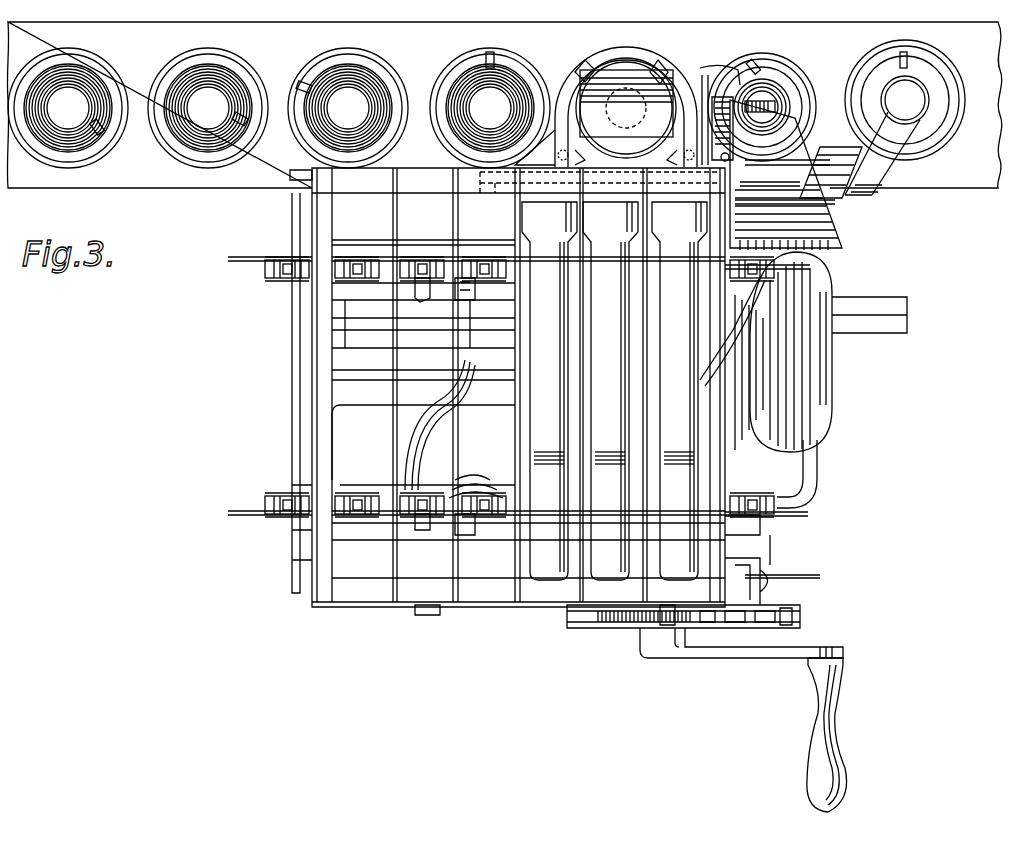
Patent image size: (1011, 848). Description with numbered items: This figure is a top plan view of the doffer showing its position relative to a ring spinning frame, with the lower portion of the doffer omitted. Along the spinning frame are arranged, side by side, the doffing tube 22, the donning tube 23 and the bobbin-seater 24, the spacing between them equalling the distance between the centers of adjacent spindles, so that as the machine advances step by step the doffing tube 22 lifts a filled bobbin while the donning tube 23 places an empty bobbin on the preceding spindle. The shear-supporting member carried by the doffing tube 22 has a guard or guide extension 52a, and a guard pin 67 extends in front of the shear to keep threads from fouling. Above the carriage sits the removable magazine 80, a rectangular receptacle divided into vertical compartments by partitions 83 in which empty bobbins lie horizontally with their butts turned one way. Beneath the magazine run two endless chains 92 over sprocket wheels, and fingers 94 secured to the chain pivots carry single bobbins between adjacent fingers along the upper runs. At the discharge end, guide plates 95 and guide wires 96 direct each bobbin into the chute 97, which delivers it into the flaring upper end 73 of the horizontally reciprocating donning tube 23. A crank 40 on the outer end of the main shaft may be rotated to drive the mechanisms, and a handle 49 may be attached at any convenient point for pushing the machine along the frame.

The doffing tube 22 is at (650, 68).
The donning tube 23 is at (775, 95).
The bobbin-seater 24 is at (860, 155).
The crank 40 is at (822, 702).
The handle 49 is at (818, 482).
The guard or guide extension 52a is at (535, 147).
The guard pin 67 is at (722, 72).
The flaring upper end 73 is at (808, 220).
The magazine 80 is at (507, 409).
The partitions 83 is at (452, 396).
The endless chains 92 is at (268, 278).
The fingers 94 is at (238, 262).
The guide plates 95 is at (800, 202).
The guide wires 96 is at (800, 264).
The chute 97 is at (818, 374).